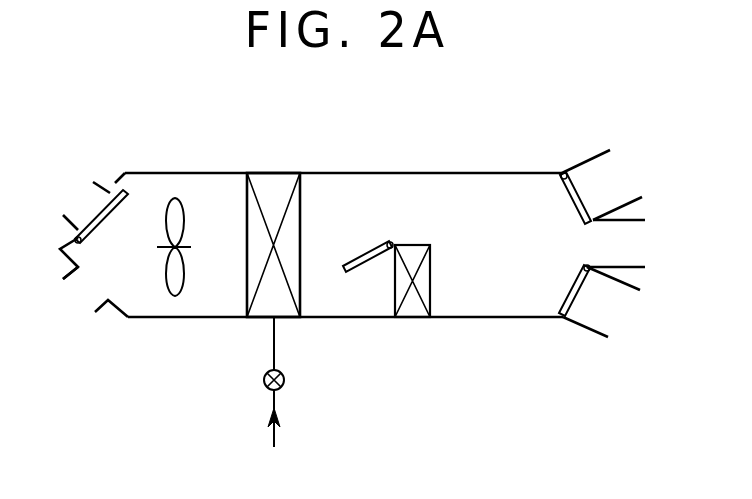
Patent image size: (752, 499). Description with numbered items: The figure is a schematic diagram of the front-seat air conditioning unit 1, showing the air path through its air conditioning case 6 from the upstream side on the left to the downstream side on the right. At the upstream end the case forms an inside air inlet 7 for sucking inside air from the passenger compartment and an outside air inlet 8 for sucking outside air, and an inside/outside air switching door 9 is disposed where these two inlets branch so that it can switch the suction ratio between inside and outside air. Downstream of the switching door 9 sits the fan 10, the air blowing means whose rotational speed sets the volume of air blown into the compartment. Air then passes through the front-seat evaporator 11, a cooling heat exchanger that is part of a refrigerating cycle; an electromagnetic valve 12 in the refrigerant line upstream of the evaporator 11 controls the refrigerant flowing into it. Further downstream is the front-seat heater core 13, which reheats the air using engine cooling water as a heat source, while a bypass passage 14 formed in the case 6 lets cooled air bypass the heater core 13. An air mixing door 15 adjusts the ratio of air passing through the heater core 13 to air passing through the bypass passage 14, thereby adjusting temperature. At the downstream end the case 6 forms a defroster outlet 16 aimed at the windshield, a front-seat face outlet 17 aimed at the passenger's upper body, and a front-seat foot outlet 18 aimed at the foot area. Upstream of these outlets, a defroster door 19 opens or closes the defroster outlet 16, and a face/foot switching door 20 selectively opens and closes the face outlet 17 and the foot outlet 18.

The front-seat air conditioning unit 1 is at (83, 151).
The air conditioning case 6 is at (370, 172).
The inside air inlet 7 is at (78, 205).
The outside air inlet 8 is at (78, 283).
The inside/outside air switching door 9 is at (123, 207).
The fan 10 is at (182, 217).
The front-seat evaporator 11 is at (272, 173).
The electromagnetic valve 12 is at (262, 380).
The front-seat heater core 13 is at (430, 293).
The bypass passage 14 is at (445, 195).
The air mixing door 15 is at (363, 270).
The defroster outlet 16 is at (605, 180).
The front-seat face outlet 17 is at (632, 247).
The front-seat foot outlet 18 is at (613, 305).
The defroster door 19 is at (570, 195).
The face/foot switching door 20 is at (570, 287).